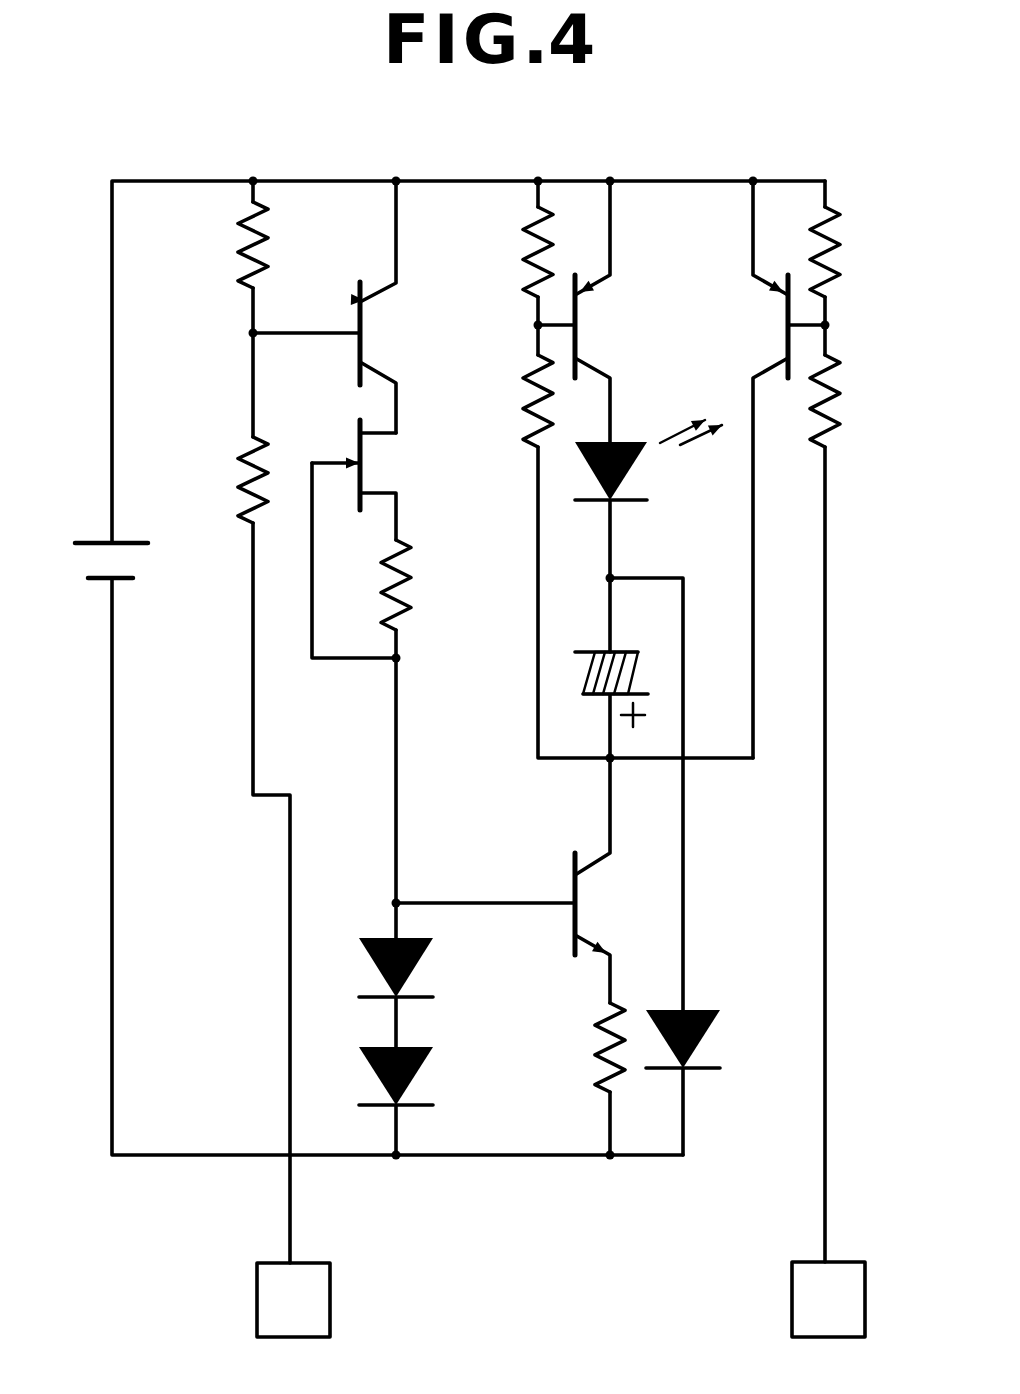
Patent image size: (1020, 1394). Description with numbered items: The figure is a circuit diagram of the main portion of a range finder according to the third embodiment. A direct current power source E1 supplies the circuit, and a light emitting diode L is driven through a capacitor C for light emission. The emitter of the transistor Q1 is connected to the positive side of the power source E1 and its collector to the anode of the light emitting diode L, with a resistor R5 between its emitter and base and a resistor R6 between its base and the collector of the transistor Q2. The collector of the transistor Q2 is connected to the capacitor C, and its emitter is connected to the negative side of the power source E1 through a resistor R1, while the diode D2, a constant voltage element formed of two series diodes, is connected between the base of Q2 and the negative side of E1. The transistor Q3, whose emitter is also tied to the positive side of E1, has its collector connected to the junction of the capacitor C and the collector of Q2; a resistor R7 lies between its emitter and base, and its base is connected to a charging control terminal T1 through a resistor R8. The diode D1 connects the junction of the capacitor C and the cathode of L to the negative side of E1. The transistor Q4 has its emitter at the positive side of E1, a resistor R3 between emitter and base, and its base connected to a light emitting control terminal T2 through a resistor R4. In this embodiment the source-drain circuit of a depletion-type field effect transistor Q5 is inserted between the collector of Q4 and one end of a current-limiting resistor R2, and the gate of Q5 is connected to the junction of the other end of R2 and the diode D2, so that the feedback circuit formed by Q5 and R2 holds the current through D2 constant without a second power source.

The direct current power source E1 is at (102, 542).
The resistor R1 is at (589, 1079).
The resistor for current limitation R2 is at (385, 683).
The resistor R3 is at (229, 257).
The resistor R4 is at (240, 798).
The resistor R5 is at (516, 253).
The resistor R6 is at (616, 541).
The resistor R7 is at (847, 253).
The resistor R8 is at (847, 793).
The transistor Q1 is at (626, 311).
The transistor Q2 is at (534, 880).
The transistor Q3 is at (758, 469).
The transistor Q4 is at (388, 307).
The field effect transistor Q5 is at (371, 480).
The diode D1 is at (711, 865).
The diode D2 is at (420, 1027).
The capacitor for light emission C is at (624, 705).
The light emitting diode L is at (648, 536).
The charging control terminal T1 is at (828, 1299).
The light emitting control terminal T2 is at (293, 1300).